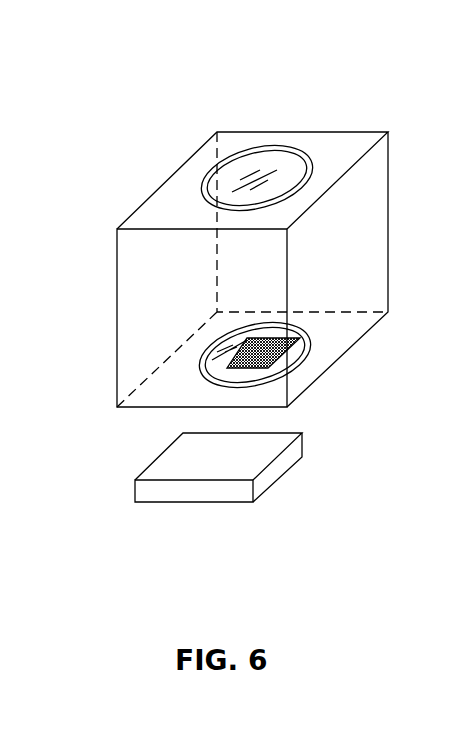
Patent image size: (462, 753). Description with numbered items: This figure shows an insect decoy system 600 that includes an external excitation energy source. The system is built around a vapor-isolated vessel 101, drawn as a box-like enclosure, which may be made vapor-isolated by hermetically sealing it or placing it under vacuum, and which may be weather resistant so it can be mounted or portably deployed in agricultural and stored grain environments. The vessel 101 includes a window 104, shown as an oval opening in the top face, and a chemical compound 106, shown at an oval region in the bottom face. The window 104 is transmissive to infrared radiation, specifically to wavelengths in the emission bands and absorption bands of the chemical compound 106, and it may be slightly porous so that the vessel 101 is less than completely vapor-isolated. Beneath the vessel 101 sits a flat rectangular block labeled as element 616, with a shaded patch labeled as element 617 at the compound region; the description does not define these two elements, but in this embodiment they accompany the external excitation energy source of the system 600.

The insect decoy system 600 is at (147, 97).
The vapor-isolated vessel 101 is at (288, 259).
The window 104 is at (262, 165).
The chemical compound 106 is at (312, 357).
The sensor array 617 is at (210, 369).
The substrate 616 is at (173, 494).